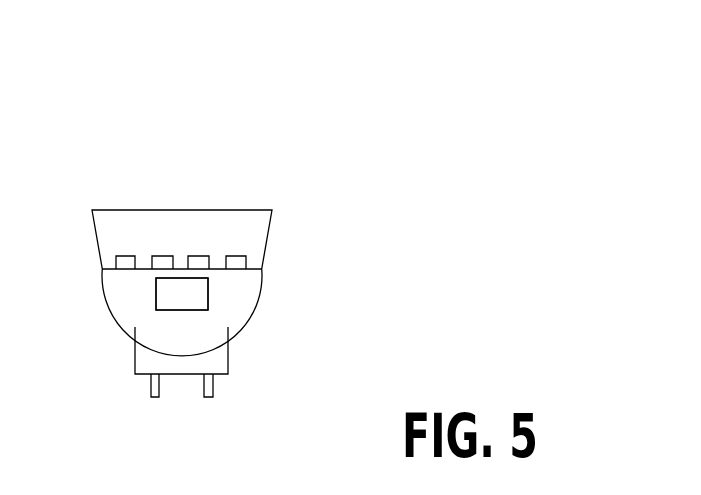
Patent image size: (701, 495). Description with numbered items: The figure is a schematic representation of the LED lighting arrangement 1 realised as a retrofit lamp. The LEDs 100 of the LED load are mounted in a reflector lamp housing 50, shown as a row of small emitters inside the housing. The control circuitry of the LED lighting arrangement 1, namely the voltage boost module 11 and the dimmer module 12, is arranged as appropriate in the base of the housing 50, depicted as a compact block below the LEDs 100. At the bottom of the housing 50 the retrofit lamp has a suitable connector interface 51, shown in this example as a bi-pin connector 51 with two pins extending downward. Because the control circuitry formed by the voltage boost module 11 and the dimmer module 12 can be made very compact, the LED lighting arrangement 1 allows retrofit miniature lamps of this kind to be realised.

The LED lighting arrangement 1 is at (433, 182).
The reflector lamp housing 50 is at (137, 210).
The LEDs 100 is at (232, 256).
The voltage boost module 11 is at (208, 291).
The dimmer module 12 is at (182, 294).
The connector interface 51 is at (229, 364).